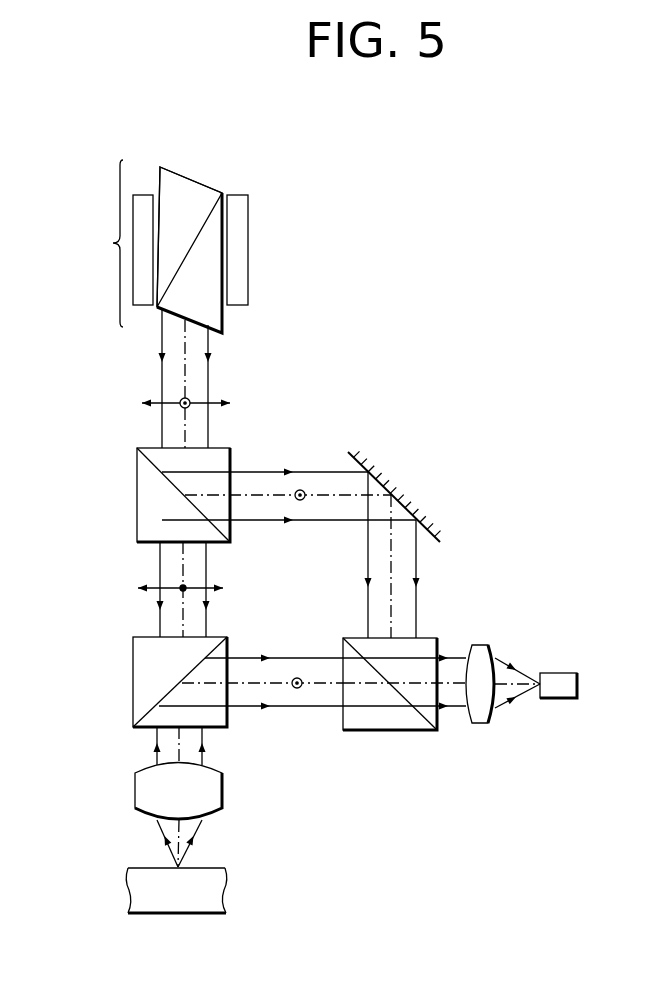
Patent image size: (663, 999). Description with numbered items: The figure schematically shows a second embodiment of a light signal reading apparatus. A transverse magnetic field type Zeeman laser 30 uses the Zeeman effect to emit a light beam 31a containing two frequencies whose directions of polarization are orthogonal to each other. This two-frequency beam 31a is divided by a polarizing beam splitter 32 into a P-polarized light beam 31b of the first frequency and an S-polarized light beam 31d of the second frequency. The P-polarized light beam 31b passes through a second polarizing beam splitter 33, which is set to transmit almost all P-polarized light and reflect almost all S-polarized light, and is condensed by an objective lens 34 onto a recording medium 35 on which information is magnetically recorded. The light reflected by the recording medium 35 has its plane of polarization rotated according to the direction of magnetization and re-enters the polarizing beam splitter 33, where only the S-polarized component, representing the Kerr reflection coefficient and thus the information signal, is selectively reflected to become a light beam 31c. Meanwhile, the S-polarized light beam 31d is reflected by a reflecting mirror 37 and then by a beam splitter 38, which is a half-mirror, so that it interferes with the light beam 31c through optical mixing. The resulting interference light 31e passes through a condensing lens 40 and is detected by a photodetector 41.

The transverse magnetic field type Zeeman laser 30 is at (113, 243).
The light beam of two frequencies 31a is at (208, 378).
The P-polarized light beam 31b is at (206, 566).
The light beam 31c is at (312, 708).
The S-polarized light beam 31d is at (322, 521).
The interference light 31e is at (453, 710).
The polarizing beam splitter 32 is at (225, 448).
The polarizing beam splitter 33 is at (225, 638).
The objective lens 34 is at (222, 792).
The recording medium 35 is at (226, 893).
The reflecting mirror 37 is at (432, 540).
The beam splitter 38 is at (383, 731).
The condensing lens 40 is at (480, 724).
The photodetector 41 is at (565, 699).